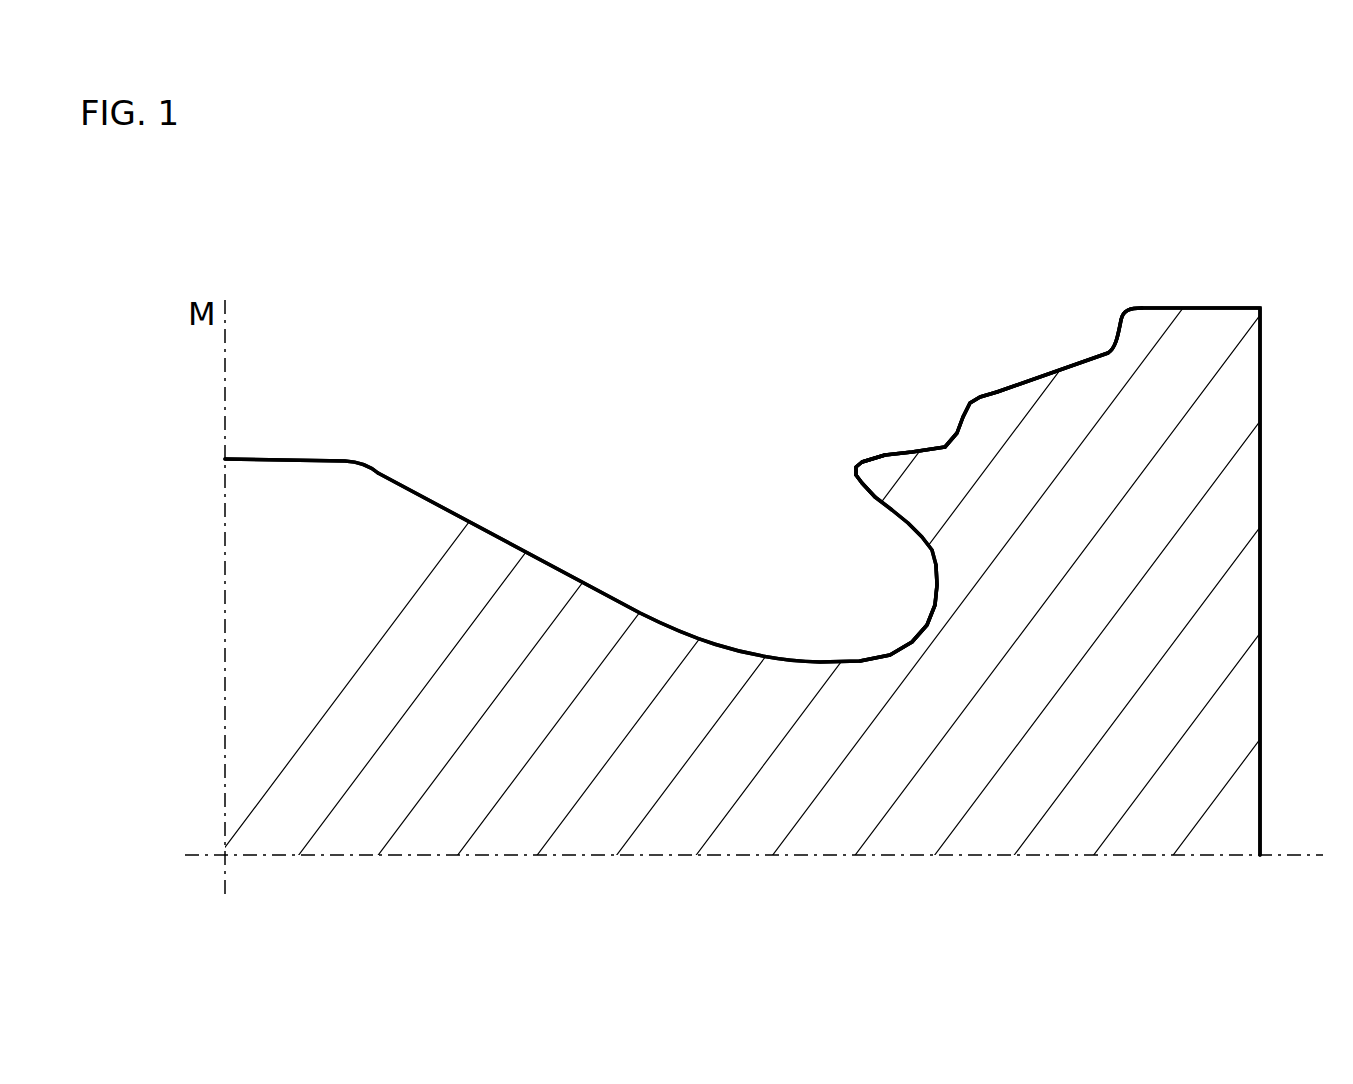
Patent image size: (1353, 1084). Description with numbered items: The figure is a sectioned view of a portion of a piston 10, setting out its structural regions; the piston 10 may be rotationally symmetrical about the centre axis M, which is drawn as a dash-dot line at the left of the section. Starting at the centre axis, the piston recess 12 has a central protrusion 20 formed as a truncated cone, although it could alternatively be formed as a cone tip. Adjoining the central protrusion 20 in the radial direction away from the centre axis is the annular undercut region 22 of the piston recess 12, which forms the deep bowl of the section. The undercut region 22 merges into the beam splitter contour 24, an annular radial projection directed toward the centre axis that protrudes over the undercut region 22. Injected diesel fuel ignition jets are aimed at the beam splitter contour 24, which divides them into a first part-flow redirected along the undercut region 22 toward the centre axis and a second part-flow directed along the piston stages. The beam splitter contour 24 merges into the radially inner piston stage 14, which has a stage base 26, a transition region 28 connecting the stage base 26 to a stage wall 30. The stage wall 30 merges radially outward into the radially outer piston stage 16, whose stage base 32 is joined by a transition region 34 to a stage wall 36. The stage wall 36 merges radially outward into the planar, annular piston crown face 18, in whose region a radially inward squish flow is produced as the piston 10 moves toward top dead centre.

The piston 10 is at (722, 223).
The piston recess 12 is at (568, 434).
The radially inner piston stage 14 is at (880, 401).
The radially outer piston stage 16 is at (1046, 310).
The piston crown face 18 is at (1241, 306).
The central protrusion 20 is at (330, 446).
The undercut region 22 is at (917, 633).
The beam splitter contour 24 is at (853, 477).
The stage base 26 is at (905, 452).
The transition region 28 is at (950, 444).
The stage wall 30 is at (959, 430).
The stage base 32 is at (1043, 377).
The transition region 34 is at (1103, 350).
The stage wall 36 is at (1113, 318).